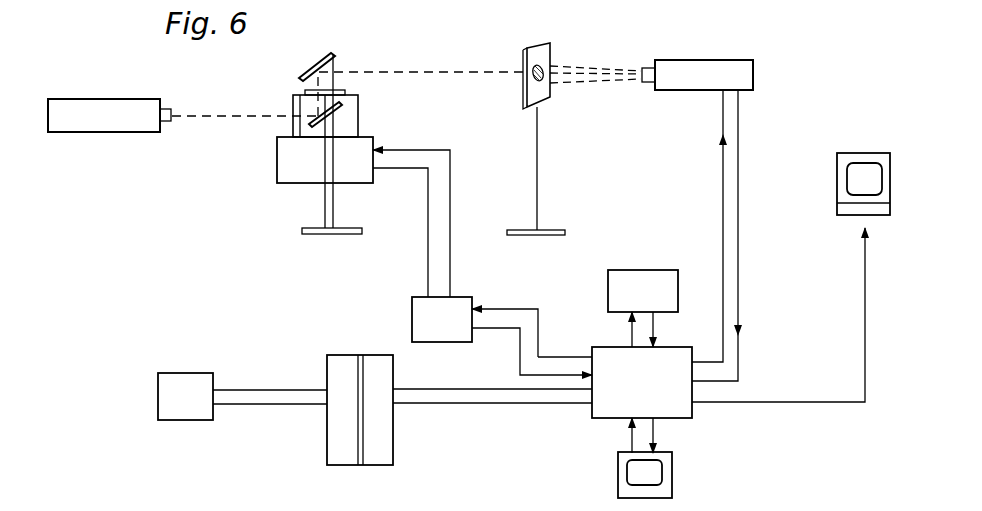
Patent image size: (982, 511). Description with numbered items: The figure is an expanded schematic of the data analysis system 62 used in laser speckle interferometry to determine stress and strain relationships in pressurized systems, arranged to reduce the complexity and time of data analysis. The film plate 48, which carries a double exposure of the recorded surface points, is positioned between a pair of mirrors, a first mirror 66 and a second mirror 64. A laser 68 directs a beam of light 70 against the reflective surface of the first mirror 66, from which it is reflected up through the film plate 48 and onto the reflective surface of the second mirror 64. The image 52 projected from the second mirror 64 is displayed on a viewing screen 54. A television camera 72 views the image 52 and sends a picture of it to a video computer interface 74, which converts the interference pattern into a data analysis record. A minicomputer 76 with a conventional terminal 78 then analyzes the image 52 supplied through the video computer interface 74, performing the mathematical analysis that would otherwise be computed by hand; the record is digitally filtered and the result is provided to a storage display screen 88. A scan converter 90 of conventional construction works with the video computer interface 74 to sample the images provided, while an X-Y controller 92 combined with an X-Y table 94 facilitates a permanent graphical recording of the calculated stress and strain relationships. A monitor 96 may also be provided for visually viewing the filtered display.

The film plate 48 is at (345, 92).
The image 52 is at (532, 87).
The viewing screen 54 is at (533, 48).
The data analysis system 62 is at (771, 118).
The second mirror 64 is at (333, 58).
The first mirror 66 is at (342, 106).
The laser 68 is at (97, 124).
The beam of light 70 is at (222, 117).
The television camera 72 is at (697, 83).
The video computer interface 74 is at (675, 412).
The minicomputer 76 is at (375, 438).
The terminal 78 is at (168, 390).
The storage display screen 88 is at (633, 470).
The scan converter 90 is at (645, 282).
The X-Y controller 92 is at (425, 313).
The X-Y table 94 is at (291, 173).
The monitor 96 is at (847, 183).